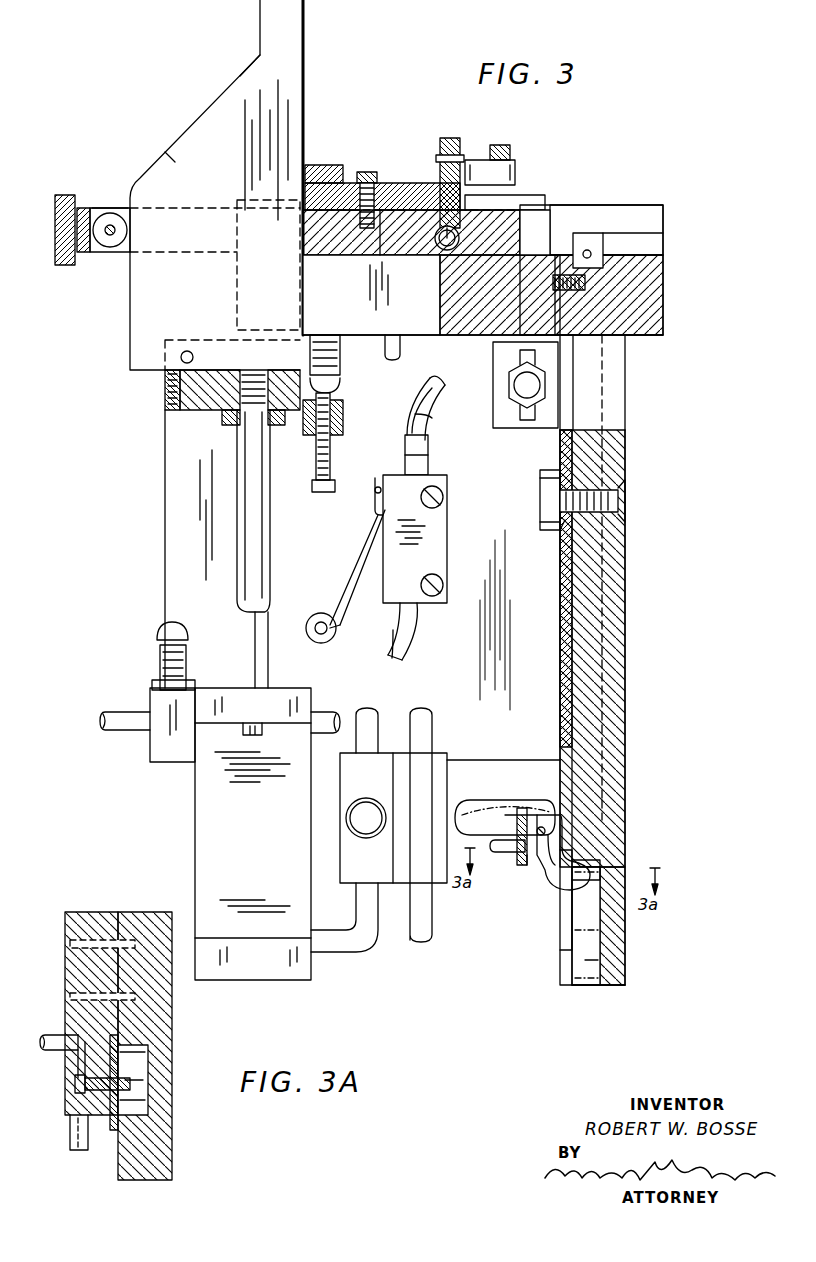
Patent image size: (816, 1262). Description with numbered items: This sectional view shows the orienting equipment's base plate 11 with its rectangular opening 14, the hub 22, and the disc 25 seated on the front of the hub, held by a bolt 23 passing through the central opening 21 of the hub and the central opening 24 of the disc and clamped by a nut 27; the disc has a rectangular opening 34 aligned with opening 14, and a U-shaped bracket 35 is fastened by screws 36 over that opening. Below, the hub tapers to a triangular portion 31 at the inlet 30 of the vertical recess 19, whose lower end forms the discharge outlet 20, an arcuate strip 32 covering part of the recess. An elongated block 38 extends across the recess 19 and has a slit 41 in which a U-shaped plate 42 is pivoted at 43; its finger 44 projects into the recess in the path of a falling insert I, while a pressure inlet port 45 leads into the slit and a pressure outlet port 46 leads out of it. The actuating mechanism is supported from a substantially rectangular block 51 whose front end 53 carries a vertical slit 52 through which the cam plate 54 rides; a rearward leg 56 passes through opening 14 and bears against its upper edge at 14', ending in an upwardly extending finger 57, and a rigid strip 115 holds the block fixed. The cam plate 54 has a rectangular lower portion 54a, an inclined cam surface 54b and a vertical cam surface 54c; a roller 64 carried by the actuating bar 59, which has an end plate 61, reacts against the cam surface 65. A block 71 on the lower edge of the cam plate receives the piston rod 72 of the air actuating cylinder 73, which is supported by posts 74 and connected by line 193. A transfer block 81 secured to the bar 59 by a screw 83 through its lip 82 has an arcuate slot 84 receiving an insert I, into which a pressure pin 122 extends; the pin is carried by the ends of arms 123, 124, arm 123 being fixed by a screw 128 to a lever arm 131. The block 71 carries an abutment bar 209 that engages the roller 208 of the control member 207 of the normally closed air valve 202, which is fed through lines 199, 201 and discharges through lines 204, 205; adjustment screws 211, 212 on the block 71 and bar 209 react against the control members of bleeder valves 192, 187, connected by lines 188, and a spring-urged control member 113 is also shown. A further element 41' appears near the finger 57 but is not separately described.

In FIG. 3, the cam plate 54 is at (200, 135).
In FIG. 3, the vertical cam surface 54c is at (290, 34).
In FIG. 3, the cam surface 65 is at (222, 82).
In FIG. 3, the inclined cam surface 54b is at (171, 160).
In FIG. 3, the front end 53 is at (232, 285).
In FIG. 3, the rectangular lower portion 54a is at (140, 358).
In FIG. 3, the end plate 61 is at (55, 213).
In FIG. 3, the roller 64 is at (111, 240).
In FIG. 3, the actuating bar 59 is at (100, 208).
In FIG. 3, the adjustment screw 211 is at (165, 388).
In FIG. 3, the block 71 is at (210, 410).
In FIG. 3, the piston rod 72 is at (240, 470).
In FIG. 3, the posts 74 is at (240, 636).
In FIG. 3, the actuating cylinder 73 is at (228, 838).
In FIG. 3, the bleeder valve 192 is at (160, 755).
In FIG. 3, the lines 188 is at (140, 732).
In FIG. 3, the line 193 is at (325, 722).
In FIG. 3, the arm 123 is at (385, 190).
In FIG. 3, the screw 128 is at (320, 165).
In FIG. 3, the lever arm 131 is at (358, 176).
In FIG. 3, the pressure pin 122 is at (436, 170).
In FIG. 3, the arcuate transverse slot 84 is at (440, 250).
In FIG. 3, the arm 124 is at (468, 160).
In FIG. 3, the transfer block 81 is at (505, 228).
In FIG. 3, the lip 82 is at (362, 258).
In FIG. 3, the screw 83 is at (390, 258).
In FIG. 3, the U-shaped bracket 35 is at (548, 292).
In FIG. 3, the rigid strip 115 is at (625, 188).
In FIG. 3, the screws 36 is at (553, 280).
In FIG. 3, the finger 57 is at (655, 310).
In FIG. 3, the plunger 41' is at (611, 246).
In FIG. 3, the bearing location 14' is at (646, 257).
In FIG. 3, the vertical slit 52 is at (428, 338).
In FIG. 3, the block 51 is at (402, 346).
In FIG. 3, the leg 56 is at (585, 335).
In FIG. 3, the rectangular opening 34 is at (595, 378).
In FIG. 3, the rectangular opening 14 is at (611, 696).
In FIG. 3, the disc 25 is at (560, 668).
In FIG. 3, the hub 22 is at (590, 572).
In FIG. 3, the base plate 11 is at (620, 592).
In FIG. 3, the control member 113 is at (540, 398).
In FIG. 3, the nut 27 is at (540, 490).
In FIG. 3, the central opening 21 is at (595, 490).
In FIG. 3, the bolt 23 is at (628, 495).
In FIG. 3, the central opening 24 is at (562, 528).
In FIG. 3, the bleeder valve 187 is at (340, 350).
In FIG. 3, the abutment bar 209 is at (343, 432).
In FIG. 3, the adjustment screw 212 is at (322, 492).
In FIG. 3, the line 205 is at (412, 398).
In FIG. 3, the line 204 is at (435, 420).
In FIG. 3, the air valve 202 is at (447, 518).
In FIG. 3, the control member 207 is at (340, 608).
In FIG. 3, the roller 208 is at (312, 640).
In FIG. 3, the line 199 is at (412, 620).
In FIG. 3, the line 201 is at (393, 660).
In FIG. 3, the U-shaped plate 42 is at (462, 810).
In FIG. 3A, the U-shaped plate 42 is at (92, 1078).
In FIG. 3, the elongated block 38 is at (522, 812).
In FIG. 3A, the elongated block 38 is at (65, 960).
In FIG. 3, the pressure outlet port 46 is at (500, 852).
In FIG. 3A, the pressure outlet port 46 is at (55, 1038).
In FIG. 3, the pivot 43 is at (545, 880).
In FIG. 3, the finger 44 is at (590, 900).
In FIG. 3A, the finger 44 is at (150, 1076).
In FIG. 3, the pressure inlet port 45 is at (535, 876).
In FIG. 3A, the pressure inlet port 45 is at (70, 1126).
In FIG. 3, the arcuate strip 32 is at (565, 925).
In FIG. 3, the triangular portion 31 is at (590, 855).
In FIG. 3, the inlet 30 is at (595, 875).
In FIG. 3, the vertical recess 19 is at (605, 915).
In FIG. 3A, the vertical recess 19 is at (135, 1040).
In FIG. 3, the insert I is at (600, 958).
In FIG. 3A, the insert I is at (150, 1085).
In FIG. 3, the discharge outlet 20 is at (585, 985).
In FIG. 3A, the slit 41 is at (103, 1099).